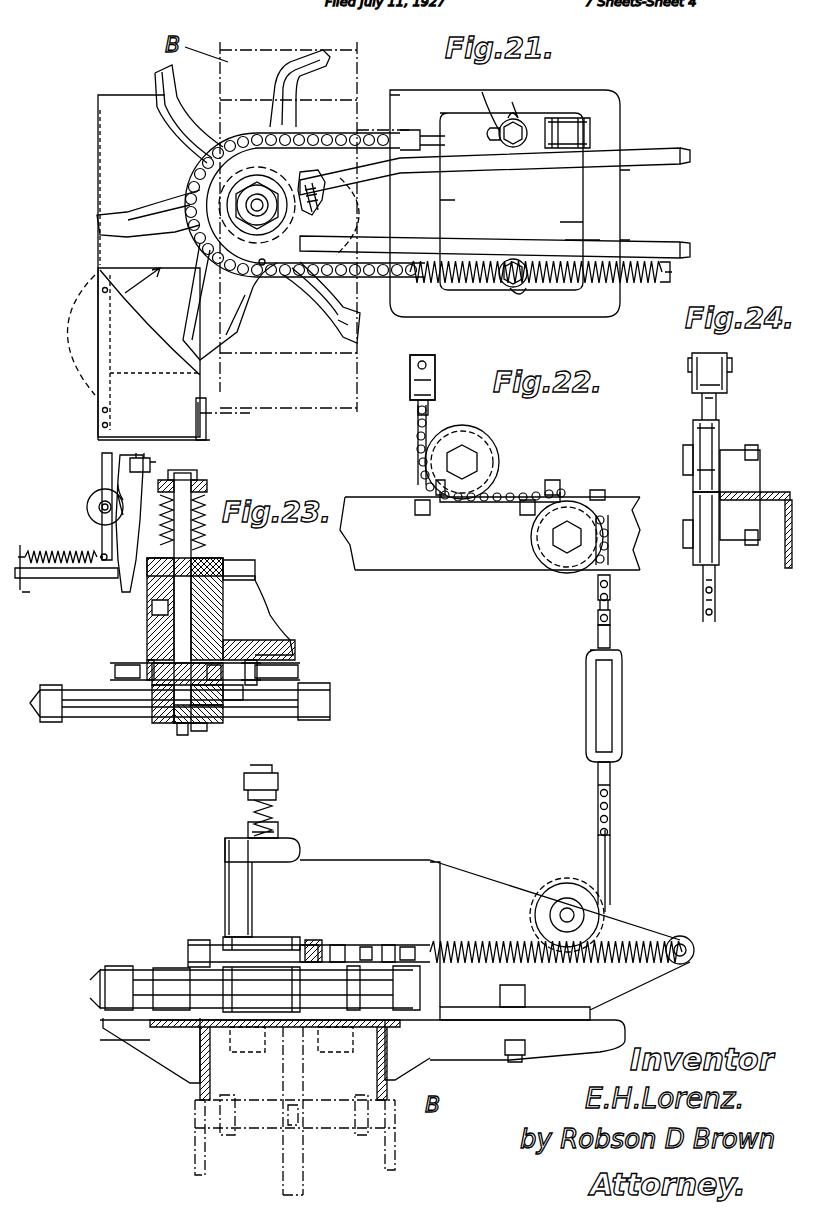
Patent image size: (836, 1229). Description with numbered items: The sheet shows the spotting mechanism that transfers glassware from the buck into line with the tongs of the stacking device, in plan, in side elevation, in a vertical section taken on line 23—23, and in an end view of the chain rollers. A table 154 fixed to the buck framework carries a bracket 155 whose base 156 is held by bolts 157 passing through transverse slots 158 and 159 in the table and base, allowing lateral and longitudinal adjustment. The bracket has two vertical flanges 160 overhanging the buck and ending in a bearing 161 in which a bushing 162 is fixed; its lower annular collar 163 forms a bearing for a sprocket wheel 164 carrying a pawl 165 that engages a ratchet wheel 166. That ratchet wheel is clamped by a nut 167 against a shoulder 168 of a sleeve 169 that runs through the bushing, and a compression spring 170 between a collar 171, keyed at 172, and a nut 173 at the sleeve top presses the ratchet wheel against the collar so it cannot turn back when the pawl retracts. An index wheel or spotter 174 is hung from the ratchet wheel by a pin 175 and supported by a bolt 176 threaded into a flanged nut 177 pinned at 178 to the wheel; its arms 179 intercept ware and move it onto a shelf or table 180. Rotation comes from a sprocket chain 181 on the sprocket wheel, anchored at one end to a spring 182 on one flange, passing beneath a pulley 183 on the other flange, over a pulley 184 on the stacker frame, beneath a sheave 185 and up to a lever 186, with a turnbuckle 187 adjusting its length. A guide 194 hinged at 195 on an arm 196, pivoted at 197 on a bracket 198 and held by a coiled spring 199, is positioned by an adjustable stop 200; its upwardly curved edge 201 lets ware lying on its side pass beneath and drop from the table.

In FIG. 21, the section line 23 is at (142, 287).
In FIG. 21, the table 154 is at (605, 196).
In FIG. 23, the table 154 is at (625, 1030).
In FIG. 21, the bracket 155 is at (450, 212).
In FIG. 23, the bracket 155 is at (455, 852).
In FIG. 21, the base 156 is at (560, 220).
In FIG. 23, the base 156 is at (600, 1008).
In FIG. 21, the bolts 157 is at (510, 147).
In FIG. 23, the bolts 157 is at (525, 990).
In FIG. 21, the slots 158 is at (515, 108).
In FIG. 21, the slots 159 is at (466, 99).
In FIG. 21, the vertical flanges 160 is at (620, 150).
In FIG. 23, the vertical flanges 160 is at (268, 592).
In FIG. 23, the bearing 161 is at (272, 612).
In FIG. 23, the bushing 162 is at (295, 648).
In FIG. 23, the annular collar or shoulder 163 is at (147, 668).
In FIG. 21, the sprocket wheel 164 is at (290, 265).
In FIG. 23, the sprocket wheel 164 is at (220, 940).
In FIG. 21, the pawl 165 is at (330, 216).
In FIG. 23, the pawl 165 is at (235, 685).
In FIG. 21, the ratchet wheel 166 is at (230, 190).
In FIG. 23, the ratchet wheel 166 is at (152, 675).
In FIG. 23, the nut 167 is at (178, 722).
In FIG. 23, the shoulder 168 is at (158, 715).
In FIG. 23, the sleeve 169 is at (147, 605).
In FIG. 23, the compression spring 170 is at (205, 540).
In FIG. 23, the collar 171 is at (257, 568).
In FIG. 23, the key 172 is at (221, 565).
In FIG. 21, the nut 173 is at (246, 205).
In FIG. 23, the nut 173 is at (200, 483).
In FIG. 21, the index wheel or spotter 174 is at (232, 345).
In FIG. 23, the index wheel or spotter 174 is at (205, 722).
In FIG. 23, the pin 175 is at (235, 700).
In FIG. 21, the bolt 176 is at (250, 196).
In FIG. 23, the bolt 176 is at (183, 620).
In FIG. 23, the flanged nut 177 is at (183, 735).
In FIG. 23, the pin 178 is at (200, 732).
In FIG. 23, the arms 179 is at (330, 698).
In FIG. 21, the shelf or table 180 is at (98, 160).
In FIG. 23, the shelf or table 180 is at (140, 1040).
In FIG. 21, the sprocket chain 181 is at (330, 140).
In FIG. 22, the sprocket chain 181 is at (416, 442).
In FIG. 24, the sprocket chain 181 is at (715, 600).
In FIG. 23, the sprocket chain 181 is at (262, 672).
In FIG. 21, the spring 182 is at (600, 280).
In FIG. 23, the spring 182 is at (620, 940).
In FIG. 21, the sheave or pulley 183 is at (590, 125).
In FIG. 23, the sheave or pulley 183 is at (565, 878).
In FIG. 22, the sheave or pulley 184 is at (562, 565).
In FIG. 24, the sheave or pulley 184 is at (720, 555).
In FIG. 22, the sheave 185 is at (490, 455).
In FIG. 24, the sheave 185 is at (712, 437).
In FIG. 22, the lever 186 is at (410, 362).
In FIG. 24, the lever 186 is at (727, 372).
In FIG. 22, the turnbuckle 187 is at (622, 705).
In FIG. 21, the guide 194 is at (135, 335).
In FIG. 21, the hinge 195 is at (68, 335).
In FIG. 21, the arm 196 is at (102, 463).
In FIG. 21, the pivot 197 is at (99, 505).
In FIG. 21, the bracket 198 is at (130, 500).
In FIG. 21, the coiled spring 199 is at (85, 552).
In FIG. 21, the adjustable stop 200 is at (124, 452).
In FIG. 21, the upwardly curved edge 201 is at (208, 410).